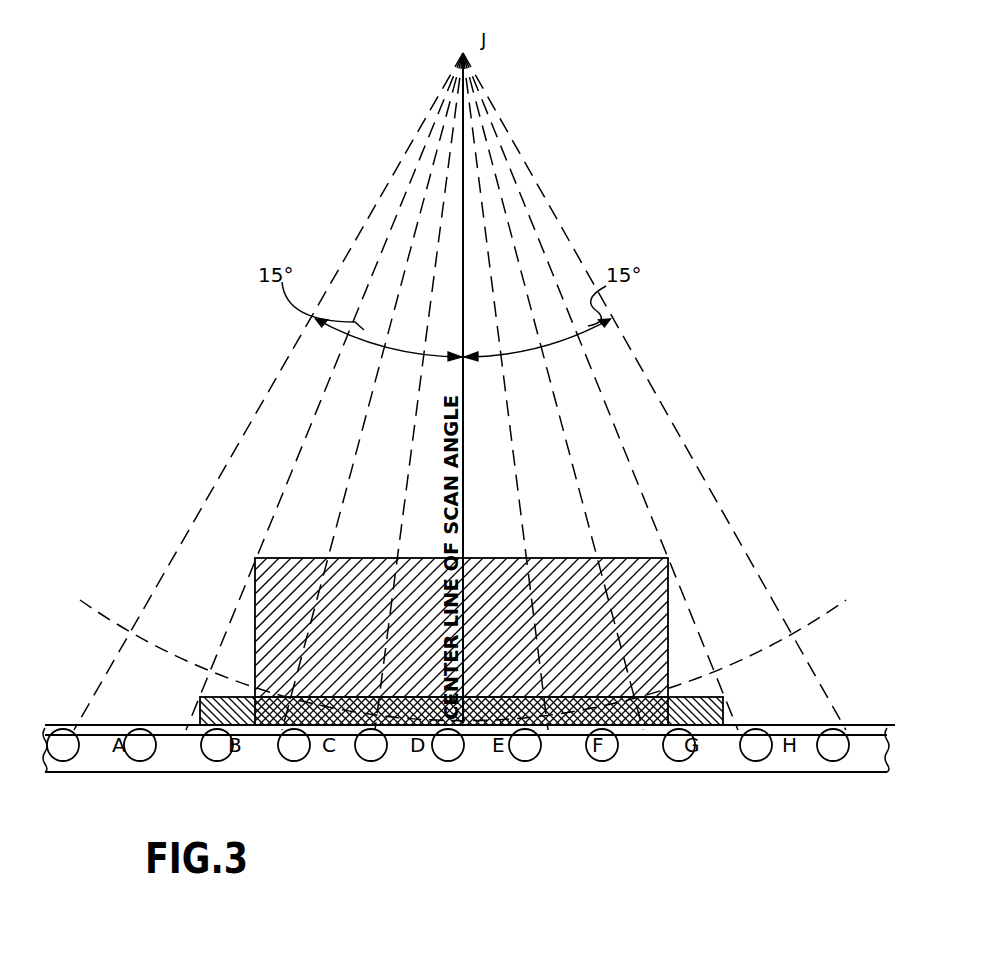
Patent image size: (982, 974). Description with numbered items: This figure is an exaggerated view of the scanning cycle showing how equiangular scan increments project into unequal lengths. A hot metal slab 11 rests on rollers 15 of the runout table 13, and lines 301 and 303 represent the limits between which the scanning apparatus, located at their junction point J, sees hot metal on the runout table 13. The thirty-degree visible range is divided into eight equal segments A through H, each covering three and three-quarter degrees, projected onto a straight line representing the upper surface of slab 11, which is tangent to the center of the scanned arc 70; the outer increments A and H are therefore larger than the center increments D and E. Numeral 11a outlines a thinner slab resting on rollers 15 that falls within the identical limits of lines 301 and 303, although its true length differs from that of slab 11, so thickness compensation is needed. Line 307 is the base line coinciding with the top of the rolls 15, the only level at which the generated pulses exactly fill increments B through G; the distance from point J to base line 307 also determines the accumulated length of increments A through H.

The hot metal slab 11 is at (670, 572).
The slab of hot metal 11a is at (726, 700).
The runout table 13 is at (643, 762).
The rollers 15 is at (841, 752).
The scanned arc 70 is at (806, 628).
The line 301 is at (299, 456).
The line 303 is at (631, 464).
The base line 307 is at (855, 725).